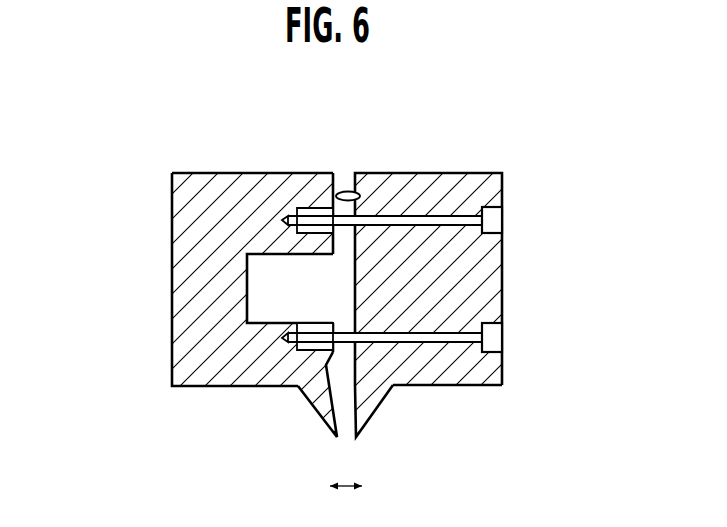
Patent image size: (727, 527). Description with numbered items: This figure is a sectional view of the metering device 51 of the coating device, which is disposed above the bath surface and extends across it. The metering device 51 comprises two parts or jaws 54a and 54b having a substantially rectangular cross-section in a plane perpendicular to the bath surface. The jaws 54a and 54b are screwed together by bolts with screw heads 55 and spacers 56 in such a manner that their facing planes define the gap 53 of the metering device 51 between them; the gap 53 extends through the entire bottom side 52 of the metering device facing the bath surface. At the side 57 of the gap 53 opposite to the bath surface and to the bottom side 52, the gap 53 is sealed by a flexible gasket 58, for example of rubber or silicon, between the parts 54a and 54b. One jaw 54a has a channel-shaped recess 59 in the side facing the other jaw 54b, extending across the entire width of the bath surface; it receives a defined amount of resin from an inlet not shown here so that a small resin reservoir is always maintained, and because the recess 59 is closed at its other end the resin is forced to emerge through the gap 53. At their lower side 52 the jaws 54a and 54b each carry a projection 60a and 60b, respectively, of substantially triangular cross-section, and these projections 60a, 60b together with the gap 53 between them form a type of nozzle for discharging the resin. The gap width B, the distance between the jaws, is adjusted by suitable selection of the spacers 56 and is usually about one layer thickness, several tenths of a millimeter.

The metering device 51 is at (363, 284).
The bottom side of the metering device 52 is at (445, 388).
The gap 53 is at (345, 436).
The first jaw 54a is at (172, 262).
The second jaw 54b is at (503, 275).
The screw heads 55 is at (492, 220).
The spacers 56 is at (360, 212).
The side of the gap opposite the bath surface 57 is at (290, 172).
The flexible gasket 58 is at (343, 190).
The channel-shaped recess 59 is at (262, 297).
The first projection 60a is at (328, 403).
The second projection 60b is at (368, 410).